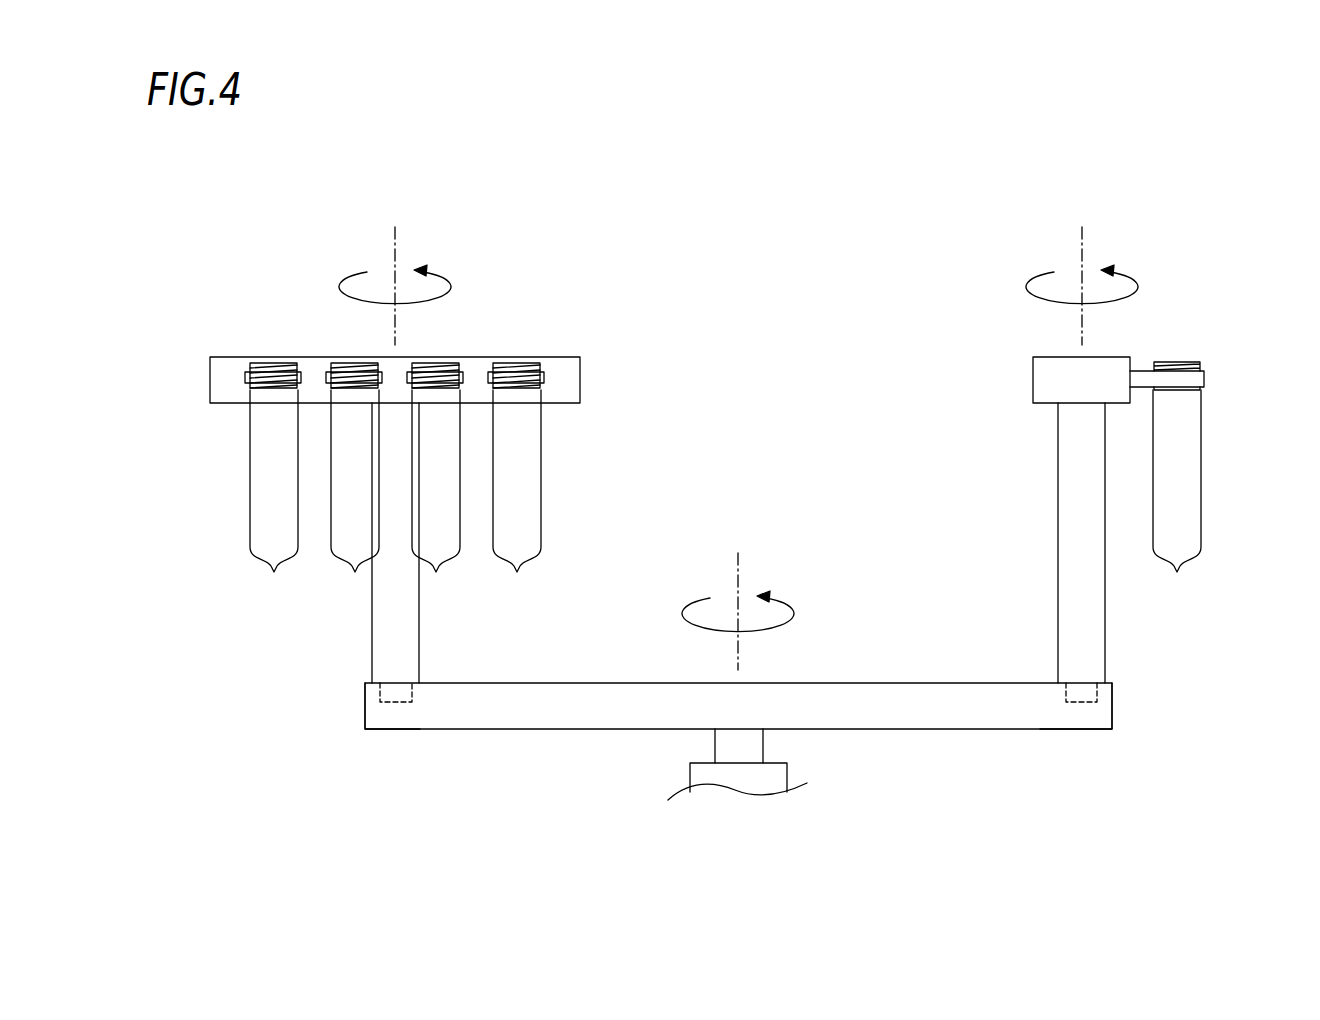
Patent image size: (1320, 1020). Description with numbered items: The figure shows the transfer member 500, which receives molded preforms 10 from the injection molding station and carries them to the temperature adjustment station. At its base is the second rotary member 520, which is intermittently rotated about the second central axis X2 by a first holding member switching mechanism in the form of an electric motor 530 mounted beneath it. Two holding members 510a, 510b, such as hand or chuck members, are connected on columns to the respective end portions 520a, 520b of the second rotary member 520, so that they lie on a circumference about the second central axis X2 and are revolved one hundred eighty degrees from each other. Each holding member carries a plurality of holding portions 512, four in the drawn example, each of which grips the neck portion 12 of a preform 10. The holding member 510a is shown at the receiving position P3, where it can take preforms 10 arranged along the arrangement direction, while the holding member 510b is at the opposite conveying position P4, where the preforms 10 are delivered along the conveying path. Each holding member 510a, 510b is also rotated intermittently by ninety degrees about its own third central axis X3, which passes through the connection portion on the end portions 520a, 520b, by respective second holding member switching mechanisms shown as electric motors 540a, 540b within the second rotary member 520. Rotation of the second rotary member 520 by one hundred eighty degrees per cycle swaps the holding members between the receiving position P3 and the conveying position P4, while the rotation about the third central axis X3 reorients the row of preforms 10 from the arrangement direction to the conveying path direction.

The transfer member 500 is at (1081, 154).
The holding member 510a is at (1033, 380).
The holding member 510b is at (580, 380).
The holding portion 512 is at (246, 372).
The second rotary member 520 is at (940, 683).
The end portion 520a is at (1040, 730).
The end portion 520b is at (422, 730).
The electric motor 530 is at (782, 780).
The electric motor 540a is at (1100, 694).
The electric motor 540b is at (368, 698).
The preform 10 is at (525, 487).
The neck portion 12 is at (282, 386).
The second central axis X2 is at (738, 580).
The third central axis X3 is at (395, 253).
The receiving position P3 is at (1140, 236).
The conveying position P4 is at (461, 233).